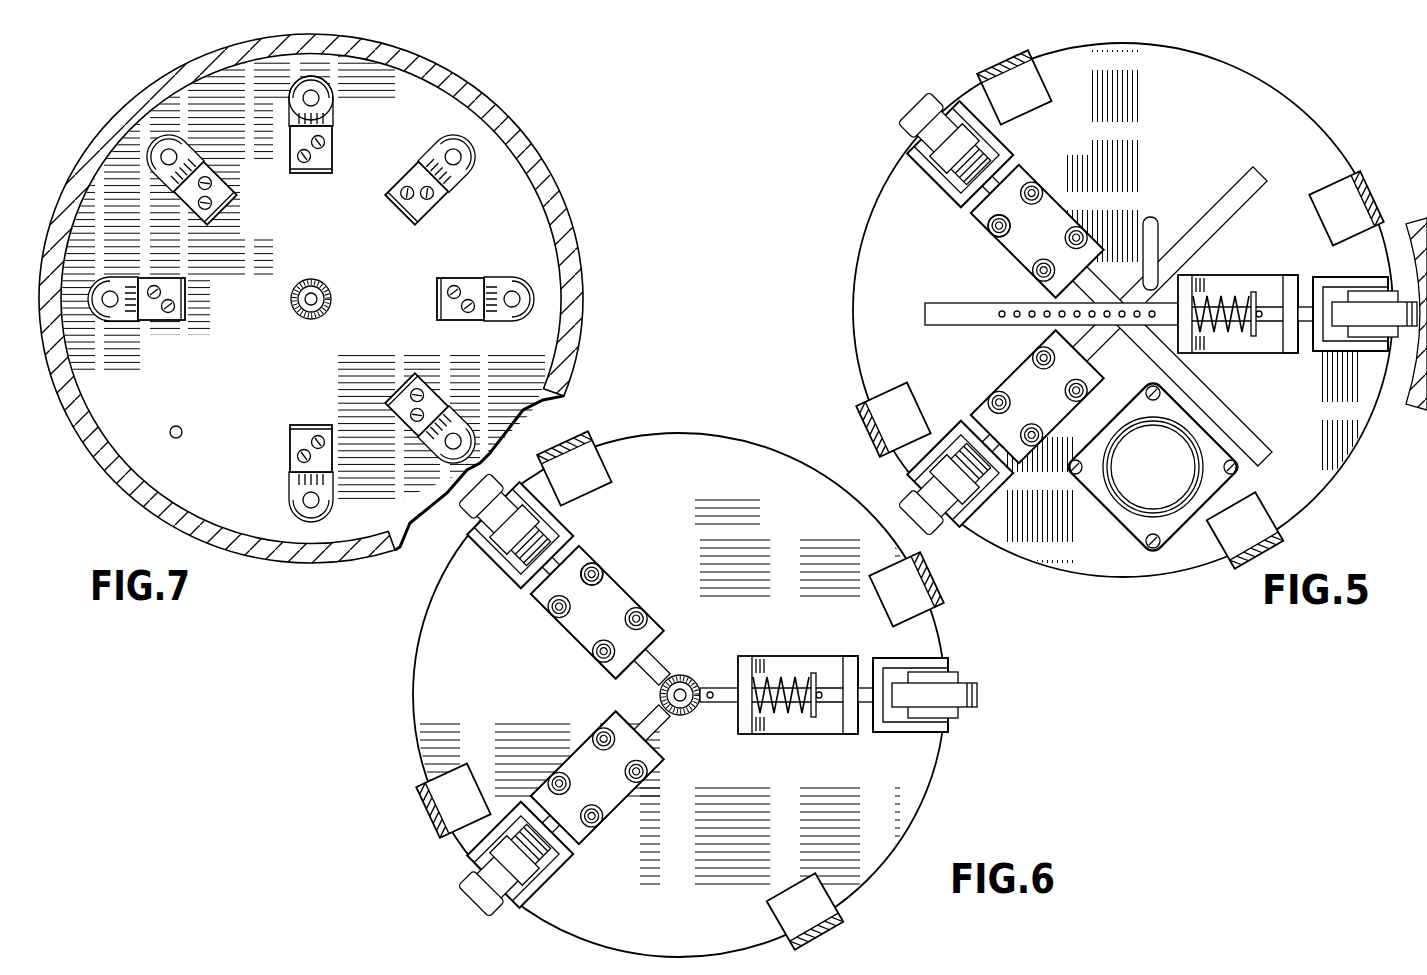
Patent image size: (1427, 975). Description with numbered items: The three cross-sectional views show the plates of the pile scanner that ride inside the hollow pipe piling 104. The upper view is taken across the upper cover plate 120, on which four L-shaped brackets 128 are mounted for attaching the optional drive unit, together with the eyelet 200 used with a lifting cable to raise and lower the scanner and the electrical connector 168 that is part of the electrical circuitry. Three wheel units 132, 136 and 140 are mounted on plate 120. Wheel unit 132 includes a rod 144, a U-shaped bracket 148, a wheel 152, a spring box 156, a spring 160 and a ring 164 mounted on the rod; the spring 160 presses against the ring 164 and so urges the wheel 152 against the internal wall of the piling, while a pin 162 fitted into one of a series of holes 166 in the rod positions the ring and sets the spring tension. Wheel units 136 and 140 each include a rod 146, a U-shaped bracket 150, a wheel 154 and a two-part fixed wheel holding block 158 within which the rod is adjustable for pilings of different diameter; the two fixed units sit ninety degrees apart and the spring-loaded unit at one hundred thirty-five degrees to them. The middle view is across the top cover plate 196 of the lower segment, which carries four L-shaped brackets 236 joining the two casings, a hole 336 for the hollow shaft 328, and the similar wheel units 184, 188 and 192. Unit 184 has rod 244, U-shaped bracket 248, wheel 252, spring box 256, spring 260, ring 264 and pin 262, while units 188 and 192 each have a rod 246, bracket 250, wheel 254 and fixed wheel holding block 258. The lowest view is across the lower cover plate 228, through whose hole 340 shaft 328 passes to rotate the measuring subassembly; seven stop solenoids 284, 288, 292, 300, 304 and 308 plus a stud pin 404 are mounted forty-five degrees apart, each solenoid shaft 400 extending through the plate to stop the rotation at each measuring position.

In FIG. 7, the lower cover plate 228 is at (566, 195).
In FIG. 7, the stop solenoid 284 is at (128, 237).
In FIG. 7, the stop solenoid 288 is at (188, 152).
In FIG. 7, the stop solenoid 292 is at (288, 100).
In FIG. 7, the rod 246 is at (446, 140).
In FIG. 6, the rod 246 is at (650, 668).
In FIG. 7, the stop solenoid 300 is at (505, 285).
In FIG. 7, the stop solenoid 304 is at (468, 420).
In FIG. 7, the stop solenoid 308 is at (330, 500).
In FIG. 7, the solenoid shaft 400 is at (332, 100).
In FIG. 7, the hole 340 is at (320, 280).
In FIG. 7, the hollow shaft 328 is at (332, 298).
In FIG. 6, the hollow shaft 328 is at (694, 663).
In FIG. 7, the pin 404 is at (182, 434).
In FIG. 6, the top cover plate 196 is at (416, 640).
In FIG. 6, the L-shaped bracket 236 is at (588, 445).
In FIG. 6, the wheel unit 188 is at (632, 575).
In FIG. 6, the wheel unit 192 is at (562, 735).
In FIG. 6, the fixed wheel holding block 258 is at (632, 525).
In FIG. 6, the U-shaped bracket 250 is at (512, 560).
In FIG. 6, the wheel 254 is at (480, 505).
In FIG. 6, the hole 336 is at (672, 712).
In FIG. 6, the rod 244 is at (740, 686).
In FIG. 6, the spring box 256 is at (772, 735).
In FIG. 6, the spring 260 is at (780, 668).
In FIG. 6, the pin 262 is at (822, 735).
In FIG. 6, the ring (washer) 264 is at (836, 665).
In FIG. 6, the wheel unit 184 is at (811, 706).
In FIG. 6, the U-shaped bracket 248 is at (942, 734).
In FIG. 6, the wheel 252 is at (970, 700).
In FIG. 5, the upper cover plate 120 is at (1306, 126).
In FIG. 5, the L-shaped bracket 128 is at (1008, 65).
In FIG. 5, the rod 146 is at (1240, 190).
In FIG. 5, the eyelet 200 is at (1178, 192).
In FIG. 5, the rod 144 is at (1030, 311).
In FIG. 5, the holes 166 is at (1015, 312).
In FIG. 5, the wheel unit 136 is at (975, 215).
In FIG. 5, the wheel unit 140 is at (1045, 455).
In FIG. 5, the fixed wheel holding block 158 is at (1010, 237).
In FIG. 5, the U-shaped bracket 150 is at (930, 162).
In FIG. 5, the wheel 154 is at (935, 108).
In FIG. 5, the wheel unit 132 is at (1258, 320).
In FIG. 5, the spring box 156 is at (1285, 280).
In FIG. 5, the spring 160 is at (1236, 290).
In FIG. 5, the pin 162 is at (1258, 340).
In FIG. 5, the ring (washer) 164 is at (1247, 344).
In FIG. 5, the U-shaped bracket 148 is at (1355, 280).
In FIG. 5, the wheel 152 is at (1380, 330).
In FIG. 5, the electrical connector 168 is at (1125, 532).
In FIG. 5, the pipe piling 104 is at (1422, 235).